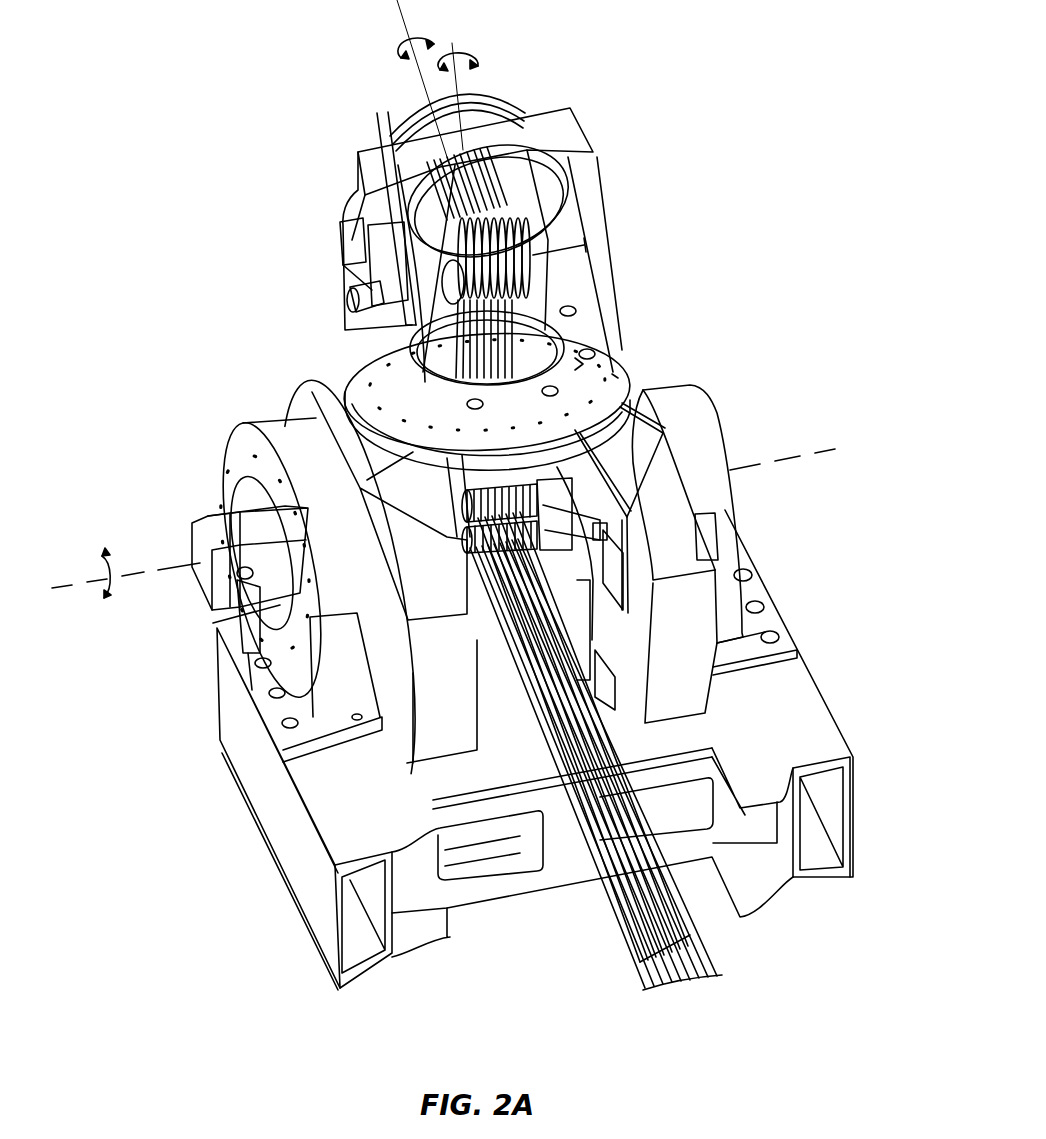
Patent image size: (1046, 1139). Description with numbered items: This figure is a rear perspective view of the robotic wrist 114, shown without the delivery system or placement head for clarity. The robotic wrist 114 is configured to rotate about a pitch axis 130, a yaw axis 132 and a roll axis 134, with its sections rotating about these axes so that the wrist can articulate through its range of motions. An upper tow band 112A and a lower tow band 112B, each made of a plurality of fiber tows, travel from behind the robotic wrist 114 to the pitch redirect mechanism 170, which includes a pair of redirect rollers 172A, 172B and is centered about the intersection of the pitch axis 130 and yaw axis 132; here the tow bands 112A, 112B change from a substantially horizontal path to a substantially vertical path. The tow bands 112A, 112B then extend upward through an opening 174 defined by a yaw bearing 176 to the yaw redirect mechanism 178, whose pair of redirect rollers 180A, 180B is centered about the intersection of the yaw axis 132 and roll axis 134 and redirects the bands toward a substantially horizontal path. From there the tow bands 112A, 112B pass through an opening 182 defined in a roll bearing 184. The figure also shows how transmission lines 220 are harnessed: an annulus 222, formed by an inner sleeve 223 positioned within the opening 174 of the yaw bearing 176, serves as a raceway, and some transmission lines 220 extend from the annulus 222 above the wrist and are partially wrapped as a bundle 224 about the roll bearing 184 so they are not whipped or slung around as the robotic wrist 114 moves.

The upper tow band 112A is at (648, 987).
The lower tow band 112B is at (619, 939).
The robotic wrist 114 is at (236, 297).
The pitch axis 130 is at (170, 570).
The yaw axis 132 is at (478, 67).
The roll axis 134 is at (423, 75).
The pitch redirect mechanism 170 is at (471, 575).
The redirect roller 172A is at (467, 503).
The redirect roller 172B is at (470, 535).
The opening 174 is at (547, 350).
The yaw bearing 176 is at (627, 323).
The yaw redirect mechanism 178 is at (517, 183).
The redirect roller 180A is at (548, 200).
The redirect roller 180B is at (490, 314).
The opening 182 is at (355, 272).
The roll bearing 184 is at (340, 192).
The transmission lines 220 is at (407, 350).
The annulus 222 is at (567, 364).
The inner sleeve 223 is at (598, 388).
The bundle 224 is at (378, 130).